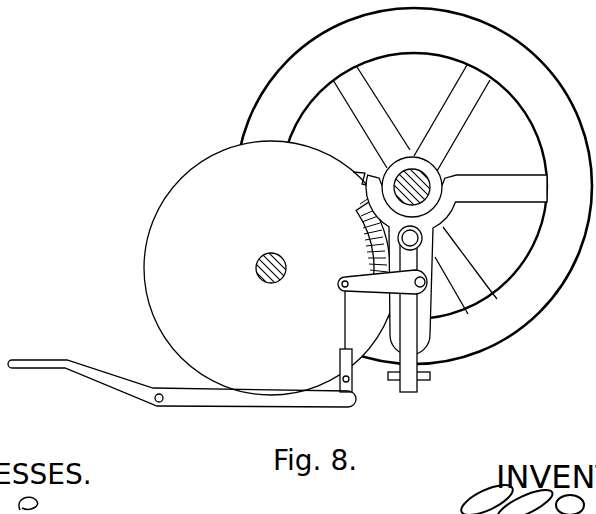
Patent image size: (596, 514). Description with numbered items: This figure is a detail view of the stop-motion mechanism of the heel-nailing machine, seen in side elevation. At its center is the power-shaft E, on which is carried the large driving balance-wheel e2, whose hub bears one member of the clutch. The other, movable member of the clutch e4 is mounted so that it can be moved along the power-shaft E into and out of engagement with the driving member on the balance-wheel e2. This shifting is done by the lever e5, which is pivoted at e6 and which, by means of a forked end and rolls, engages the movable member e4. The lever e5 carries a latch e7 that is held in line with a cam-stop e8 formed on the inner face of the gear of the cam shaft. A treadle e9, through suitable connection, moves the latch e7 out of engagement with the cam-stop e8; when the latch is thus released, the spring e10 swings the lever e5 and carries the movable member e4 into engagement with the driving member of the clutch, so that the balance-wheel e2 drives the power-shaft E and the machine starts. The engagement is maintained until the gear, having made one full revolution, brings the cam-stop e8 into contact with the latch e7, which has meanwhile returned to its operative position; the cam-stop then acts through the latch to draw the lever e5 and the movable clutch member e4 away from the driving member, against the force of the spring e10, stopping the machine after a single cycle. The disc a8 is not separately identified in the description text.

The power-shaft E is at (410, 157).
The driving balance-wheel e2 is at (414, 186).
The movable clutch member e4 is at (437, 168).
The lever e5 is at (412, 327).
The pivot e6 is at (427, 379).
The latch e7 is at (368, 289).
The cam-stop e8 is at (372, 225).
The treadle e9 is at (121, 381).
The spring e10 is at (426, 240).
The disc a8 is at (271, 268).